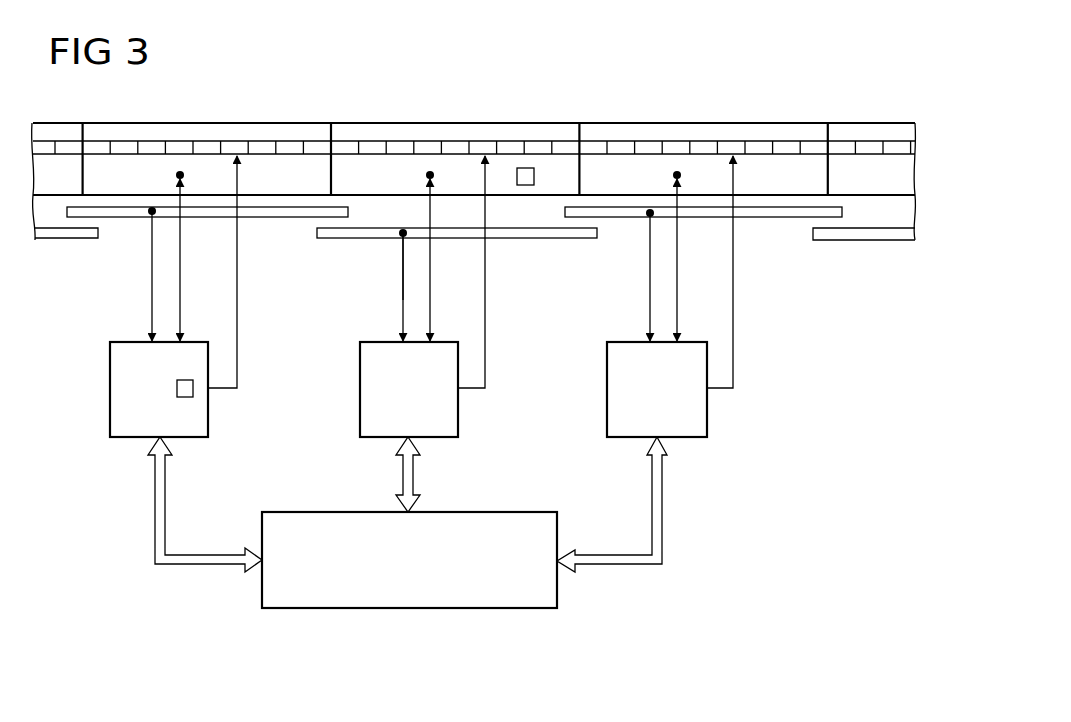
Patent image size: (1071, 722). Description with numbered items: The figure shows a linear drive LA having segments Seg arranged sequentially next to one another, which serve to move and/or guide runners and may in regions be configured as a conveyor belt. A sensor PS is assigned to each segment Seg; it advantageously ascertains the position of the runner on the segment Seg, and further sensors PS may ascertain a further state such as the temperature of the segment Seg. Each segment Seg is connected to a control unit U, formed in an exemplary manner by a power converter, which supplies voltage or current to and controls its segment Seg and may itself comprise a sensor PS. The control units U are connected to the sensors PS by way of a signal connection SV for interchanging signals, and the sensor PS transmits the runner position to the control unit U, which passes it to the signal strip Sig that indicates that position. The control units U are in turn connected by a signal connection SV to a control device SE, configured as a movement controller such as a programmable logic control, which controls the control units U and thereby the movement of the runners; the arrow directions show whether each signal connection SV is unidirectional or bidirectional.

The linear drive LA is at (474, 120).
The segment Seg is at (272, 121).
The signal strip Sig is at (180, 147).
The sensor PS is at (520, 168).
The control unit U is at (110, 388).
The signal connection SV is at (397, 309).
The control device SE is at (407, 590).